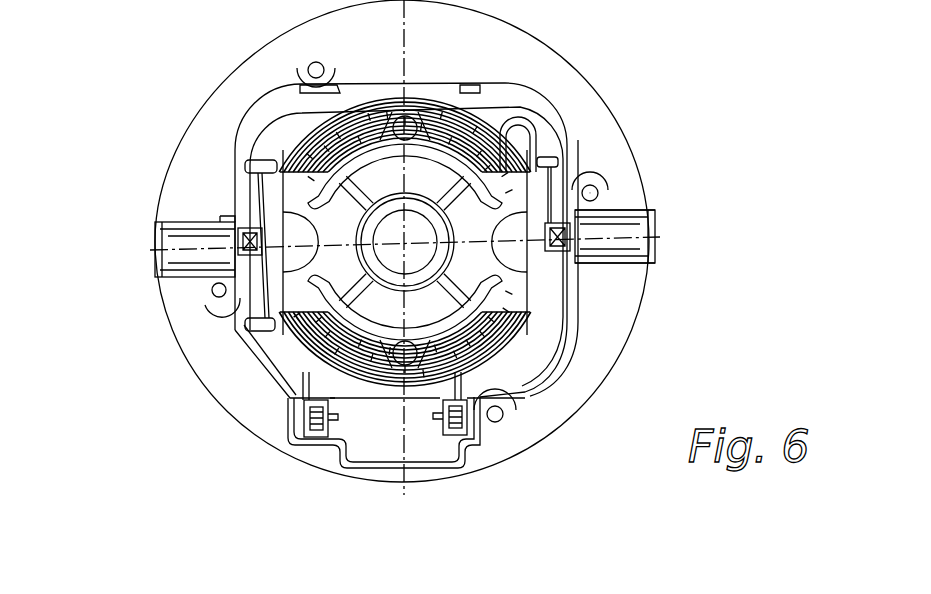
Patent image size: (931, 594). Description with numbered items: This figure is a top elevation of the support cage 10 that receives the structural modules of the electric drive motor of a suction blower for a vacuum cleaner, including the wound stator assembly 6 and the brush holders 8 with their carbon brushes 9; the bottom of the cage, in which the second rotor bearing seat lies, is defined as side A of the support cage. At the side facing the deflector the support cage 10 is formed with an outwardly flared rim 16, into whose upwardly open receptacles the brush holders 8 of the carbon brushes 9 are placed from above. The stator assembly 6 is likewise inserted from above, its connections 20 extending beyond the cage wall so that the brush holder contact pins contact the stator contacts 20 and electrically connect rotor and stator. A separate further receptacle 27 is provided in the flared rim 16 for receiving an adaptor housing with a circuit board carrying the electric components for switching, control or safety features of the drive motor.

The support cage 10 is at (195, 107).
The wound stator assembly 6 is at (540, 186).
The flared rim 16 is at (637, 193).
The carbon brushes 9 is at (665, 280).
The brush holders 8 is at (557, 237).
The side A of the support cage A is at (345, 266).
The connections 20 is at (327, 425).
The further receptacle 27 is at (372, 455).